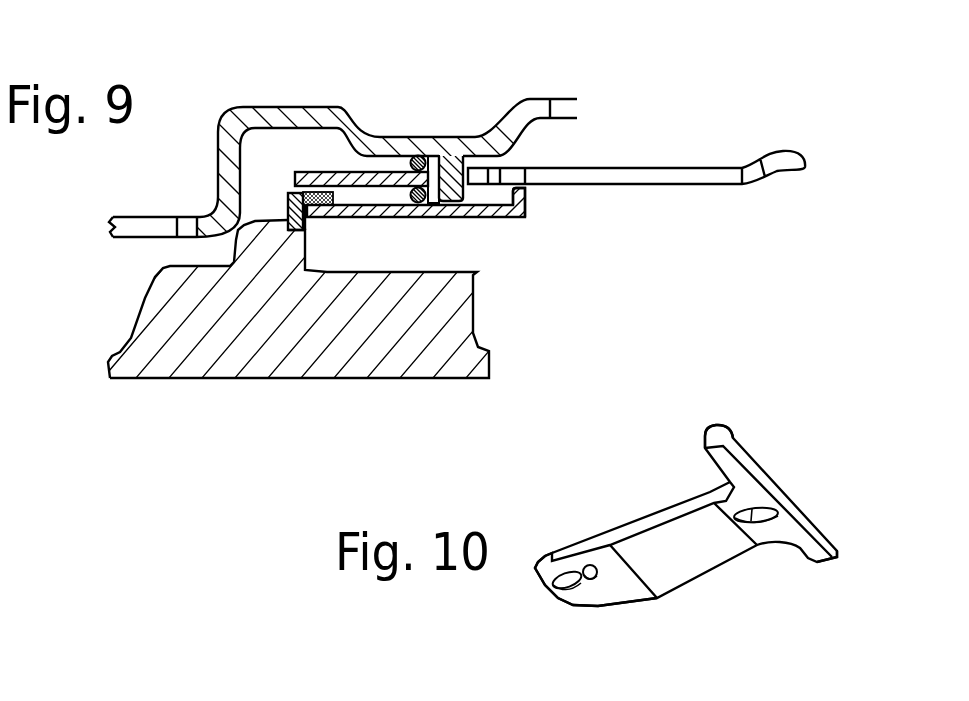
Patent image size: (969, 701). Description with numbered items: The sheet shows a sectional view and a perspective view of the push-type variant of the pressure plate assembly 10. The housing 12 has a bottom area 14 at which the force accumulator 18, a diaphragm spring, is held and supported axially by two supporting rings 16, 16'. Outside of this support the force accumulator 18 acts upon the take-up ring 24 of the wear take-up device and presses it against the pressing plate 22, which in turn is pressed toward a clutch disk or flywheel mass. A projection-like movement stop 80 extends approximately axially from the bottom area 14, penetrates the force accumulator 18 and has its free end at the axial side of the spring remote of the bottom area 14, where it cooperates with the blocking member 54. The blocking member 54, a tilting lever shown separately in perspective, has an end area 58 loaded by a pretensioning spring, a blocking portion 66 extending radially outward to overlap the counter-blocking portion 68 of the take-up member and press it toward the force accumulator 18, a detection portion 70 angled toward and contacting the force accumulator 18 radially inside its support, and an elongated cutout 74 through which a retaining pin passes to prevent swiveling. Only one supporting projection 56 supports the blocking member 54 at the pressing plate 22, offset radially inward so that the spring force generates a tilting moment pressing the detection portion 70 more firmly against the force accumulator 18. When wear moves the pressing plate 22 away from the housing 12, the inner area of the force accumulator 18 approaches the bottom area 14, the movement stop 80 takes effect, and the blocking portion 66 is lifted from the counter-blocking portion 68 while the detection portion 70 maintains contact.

In FIG. 9, the pressure plate assembly 10 is at (226, 85).
In FIG. 9, the housing 12 is at (272, 107).
In FIG. 9, the bottom area 14 is at (535, 98).
In FIG. 9, the supporting ring 16 is at (441, 114).
In FIG. 9, the supporting ring 16' is at (420, 127).
In FIG. 9, the force accumulator 18 is at (648, 164).
In FIG. 9, the pressing plate 22 is at (337, 333).
In FIG. 9, the take-up ring 24 is at (287, 210).
In FIG. 9, the blocking member 54 is at (470, 218).
In FIG. 10, the blocking member 54 is at (799, 471).
In FIG. 10, the supporting projection 56 is at (589, 565).
In FIG. 10, the end area 58 is at (538, 582).
In FIG. 9, the blocking portion 66 is at (253, 258).
In FIG. 10, the blocking portion 66 is at (813, 548).
In FIG. 9, the counter-blocking portion 68 is at (290, 195).
In FIG. 9, the detection portion 70 is at (520, 193).
In FIG. 10, the detection portion 70 is at (720, 427).
In FIG. 10, the elongated cutout 74 is at (772, 525).
In FIG. 9, the movement stop 80 is at (445, 170).